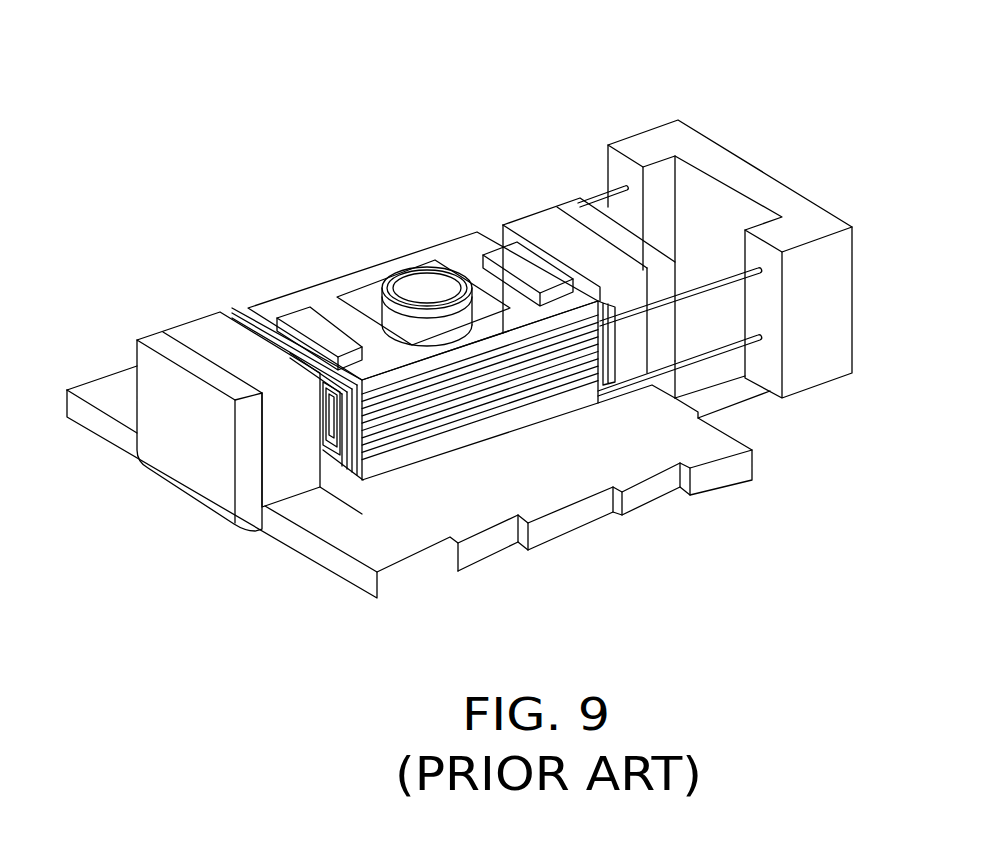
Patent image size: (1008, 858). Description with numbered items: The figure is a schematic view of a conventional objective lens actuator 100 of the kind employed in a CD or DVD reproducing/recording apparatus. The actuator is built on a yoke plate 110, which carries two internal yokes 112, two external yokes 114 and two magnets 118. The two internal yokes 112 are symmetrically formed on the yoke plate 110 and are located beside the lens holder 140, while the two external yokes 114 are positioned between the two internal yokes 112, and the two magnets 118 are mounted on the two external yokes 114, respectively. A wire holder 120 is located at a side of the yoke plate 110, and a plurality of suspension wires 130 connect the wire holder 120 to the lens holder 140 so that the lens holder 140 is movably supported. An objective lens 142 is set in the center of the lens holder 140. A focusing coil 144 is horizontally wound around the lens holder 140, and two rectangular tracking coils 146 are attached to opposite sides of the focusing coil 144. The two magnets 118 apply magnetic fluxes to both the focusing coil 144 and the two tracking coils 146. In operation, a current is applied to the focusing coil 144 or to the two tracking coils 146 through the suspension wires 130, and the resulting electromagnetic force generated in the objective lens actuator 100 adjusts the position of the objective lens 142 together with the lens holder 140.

The objective lens actuator 100 is at (479, 44).
The yoke plate 110 is at (592, 470).
The internal yokes 112 is at (297, 320).
The external yokes 114 is at (158, 340).
The magnets 118 is at (207, 323).
The wire holder 120 is at (793, 230).
The suspension wires 130 is at (752, 342).
The lens holder 140 is at (367, 275).
The objective lens 142 is at (423, 282).
The focusing coil 144 is at (415, 420).
The tracking coils 146 is at (347, 460).